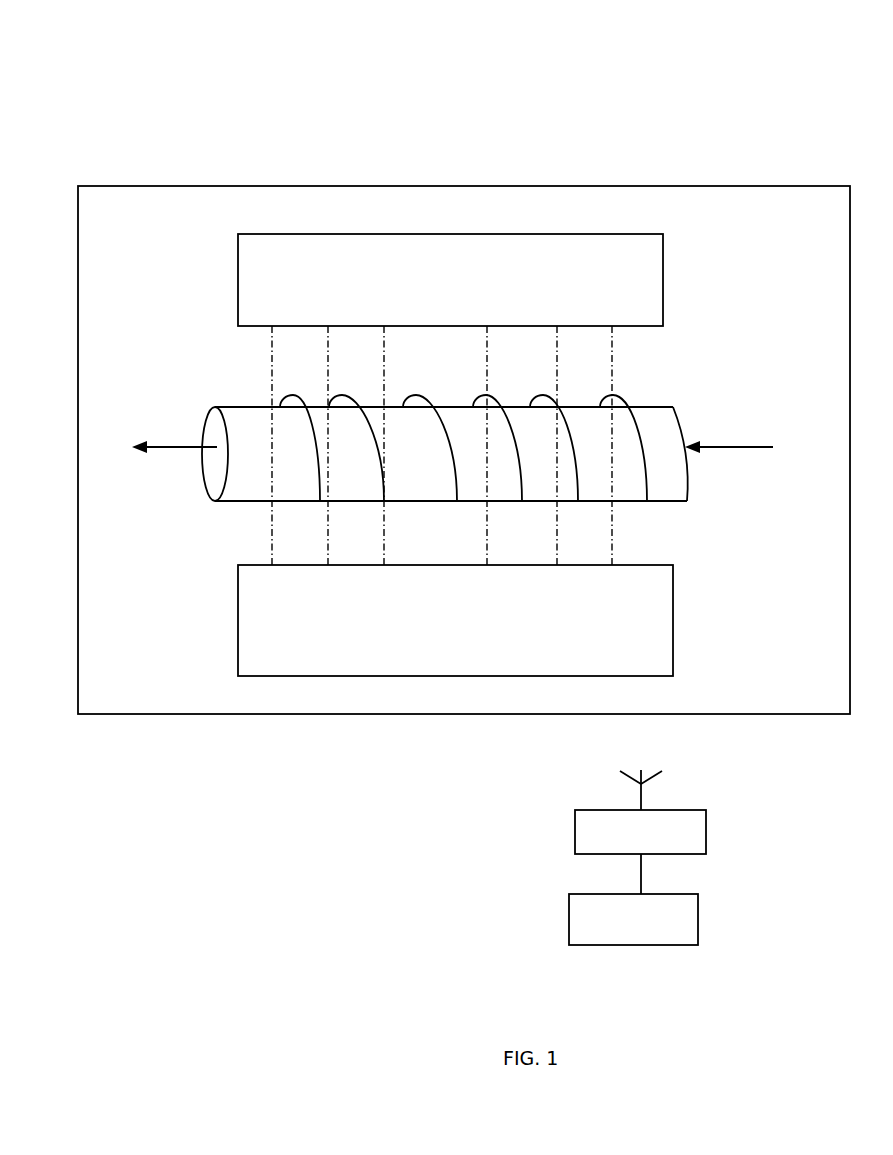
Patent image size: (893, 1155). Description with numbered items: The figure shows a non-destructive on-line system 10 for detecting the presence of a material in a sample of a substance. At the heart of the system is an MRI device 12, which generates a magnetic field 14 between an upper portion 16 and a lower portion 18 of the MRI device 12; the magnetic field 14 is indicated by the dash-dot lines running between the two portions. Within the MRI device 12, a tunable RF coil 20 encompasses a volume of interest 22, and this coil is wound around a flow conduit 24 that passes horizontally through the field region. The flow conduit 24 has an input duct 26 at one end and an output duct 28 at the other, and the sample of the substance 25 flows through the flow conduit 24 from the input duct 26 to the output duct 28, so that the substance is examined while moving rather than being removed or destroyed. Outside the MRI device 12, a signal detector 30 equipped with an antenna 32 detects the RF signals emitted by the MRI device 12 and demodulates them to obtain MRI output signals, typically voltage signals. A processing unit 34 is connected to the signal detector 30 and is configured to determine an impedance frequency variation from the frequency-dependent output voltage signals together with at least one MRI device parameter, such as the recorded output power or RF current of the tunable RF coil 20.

The non-destructive on-line system 10 is at (208, 127).
The MRI device 12 is at (78, 342).
The magnetic field 14 is at (272, 382).
The upper portion 16 is at (450, 280).
The lower portion 18 is at (465, 630).
The tunable RF coil 20 is at (636, 421).
The volume of interest 22 is at (403, 371).
The flow conduit 24 is at (687, 493).
The sample of the substance 25 is at (203, 485).
The input duct 26 is at (750, 444).
The output duct 28 is at (157, 450).
The signal detector 30 is at (706, 831).
The antenna 32 is at (641, 793).
The processing unit 34 is at (698, 916).